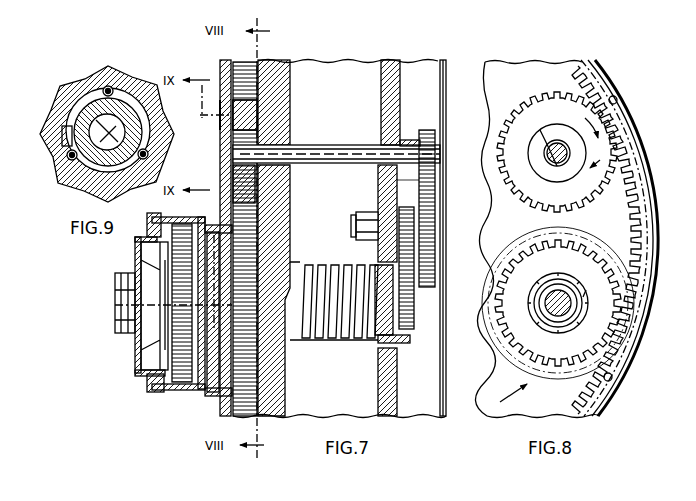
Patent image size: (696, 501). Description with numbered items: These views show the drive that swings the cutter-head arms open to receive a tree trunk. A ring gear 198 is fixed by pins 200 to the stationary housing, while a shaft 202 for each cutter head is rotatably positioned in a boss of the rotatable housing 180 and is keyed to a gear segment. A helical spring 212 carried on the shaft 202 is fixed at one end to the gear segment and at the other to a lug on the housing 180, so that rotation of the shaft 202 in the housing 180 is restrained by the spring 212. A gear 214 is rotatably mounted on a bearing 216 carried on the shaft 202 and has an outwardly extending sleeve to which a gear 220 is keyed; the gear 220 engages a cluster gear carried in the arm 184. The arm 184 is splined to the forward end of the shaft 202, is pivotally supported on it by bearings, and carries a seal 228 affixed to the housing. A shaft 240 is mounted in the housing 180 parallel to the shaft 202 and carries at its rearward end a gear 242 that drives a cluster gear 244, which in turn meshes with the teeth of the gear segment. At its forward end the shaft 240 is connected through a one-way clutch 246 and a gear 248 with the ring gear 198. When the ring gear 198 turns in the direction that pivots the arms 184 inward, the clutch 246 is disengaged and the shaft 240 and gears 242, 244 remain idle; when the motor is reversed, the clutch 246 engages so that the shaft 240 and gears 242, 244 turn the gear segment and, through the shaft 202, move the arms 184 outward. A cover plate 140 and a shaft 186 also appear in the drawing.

In FIG. 7, the cover plate 140 is at (423, 60).
In FIG. 8, the cover plate 140 is at (628, 62).
In FIG. 7, the rotatable housing 180 is at (331, 68).
In FIG. 8, the rotatable housing 180 is at (497, 64).
In FIG. 7, the arm 184 is at (151, 217).
In FIG. 7, the drive shaft 186 is at (112, 278).
In FIG. 7, the ring gear 198 is at (240, 62).
In FIG. 8, the ring gear 198 is at (630, 128).
In FIG. 8, the pins 200 is at (620, 98).
In FIG. 7, the shaft 202 is at (262, 263).
In FIG. 8, the shaft 202 is at (570, 275).
In FIG. 7, the helical spring 212 is at (329, 265).
In FIG. 7, the gear 214 is at (262, 359).
In FIG. 8, the gear 214 is at (558, 240).
In FIG. 8, the bearing 216 is at (562, 328).
In FIG. 7, the gear 220 is at (155, 388).
In FIG. 7, the seal 228 is at (220, 228).
In FIG. 8, the seal 228 is at (529, 240).
In FIG. 9, the shaft 240 is at (125, 135).
In FIG. 7, the shaft 240 is at (346, 149).
In FIG. 8, the shaft 240 is at (573, 173).
In FIG. 7, the gear 242 is at (426, 135).
In FIG. 7, the cluster gear 244 is at (418, 189).
In FIG. 9, the one-way clutch 246 is at (68, 94).
In FIG. 7, the one-way clutch 246 is at (221, 145).
In FIG. 8, the one-way clutch 246 is at (558, 140).
In FIG. 9, the gear 248 is at (80, 82).
In FIG. 7, the gear 248 is at (248, 120).
In FIG. 8, the gear 248 is at (574, 92).